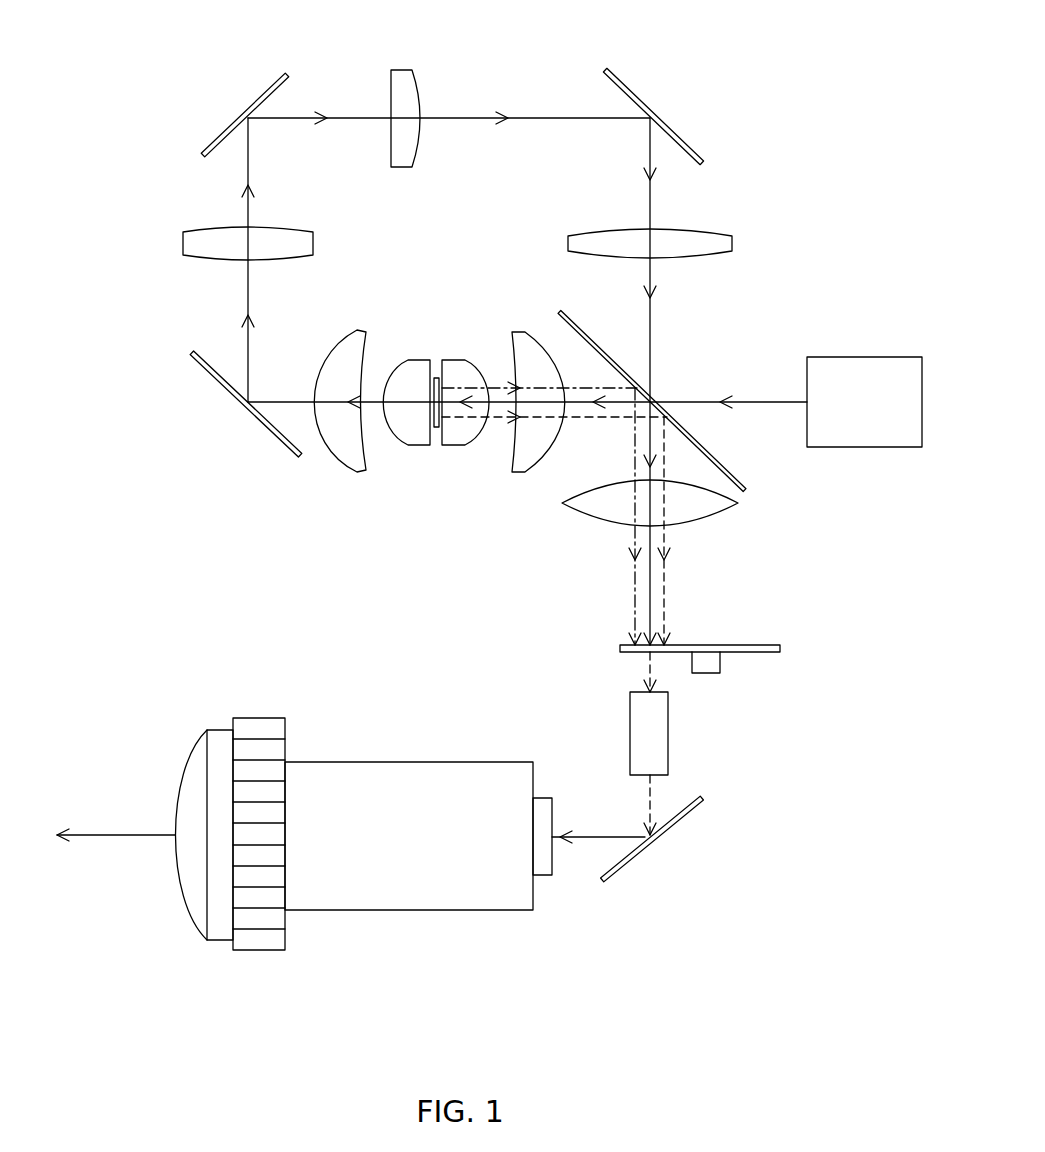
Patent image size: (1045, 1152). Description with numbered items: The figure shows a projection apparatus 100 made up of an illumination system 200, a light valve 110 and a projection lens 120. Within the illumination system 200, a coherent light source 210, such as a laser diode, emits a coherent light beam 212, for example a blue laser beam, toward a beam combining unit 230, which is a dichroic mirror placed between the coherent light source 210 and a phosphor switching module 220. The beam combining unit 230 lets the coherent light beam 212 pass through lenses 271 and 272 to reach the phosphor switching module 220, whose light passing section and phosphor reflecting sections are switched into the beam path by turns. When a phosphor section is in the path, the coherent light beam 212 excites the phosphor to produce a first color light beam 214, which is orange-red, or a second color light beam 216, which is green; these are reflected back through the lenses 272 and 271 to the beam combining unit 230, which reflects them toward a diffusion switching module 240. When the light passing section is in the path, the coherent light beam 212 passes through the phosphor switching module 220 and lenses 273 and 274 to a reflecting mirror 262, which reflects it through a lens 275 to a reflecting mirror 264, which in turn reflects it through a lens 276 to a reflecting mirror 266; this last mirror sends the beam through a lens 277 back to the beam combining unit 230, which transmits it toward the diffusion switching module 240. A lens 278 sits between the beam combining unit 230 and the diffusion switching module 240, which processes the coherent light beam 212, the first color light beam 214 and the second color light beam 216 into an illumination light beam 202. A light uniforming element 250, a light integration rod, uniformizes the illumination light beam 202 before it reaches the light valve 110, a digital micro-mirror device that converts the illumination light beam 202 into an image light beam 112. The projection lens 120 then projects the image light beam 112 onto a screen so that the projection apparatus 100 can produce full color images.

The projection apparatus 100 is at (788, 982).
The light valve 110 is at (650, 845).
The image light beam 112 is at (112, 838).
The projection lens 120 is at (407, 890).
The illumination system 200 is at (797, 719).
The illumination light beam 202 is at (652, 665).
The coherent light source 210 is at (868, 447).
The coherent light beam 212 is at (370, 392).
The first color light beam 214 is at (467, 420).
The second color light beam 216 is at (503, 388).
The phosphor switching module 220 is at (437, 430).
The beam combining unit 230 is at (748, 490).
The diffusion switching module 240 is at (782, 643).
The light uniforming element 250 is at (635, 730).
The reflecting mirror 262 is at (197, 358).
The reflecting mirror 264 is at (268, 88).
The reflecting mirror 266 is at (685, 135).
The lens 271 is at (515, 332).
The lens 272 is at (453, 368).
The lens 273 is at (415, 432).
The lens 274 is at (352, 452).
The lens 275 is at (188, 245).
The lens 276 is at (405, 80).
The lens 277 is at (735, 247).
The lens 278 is at (587, 505).